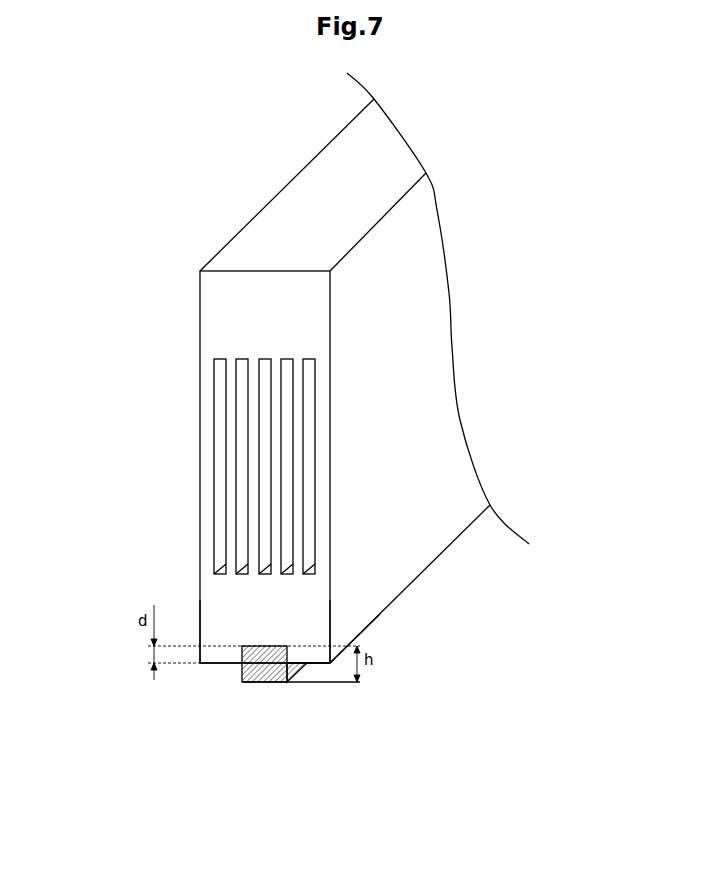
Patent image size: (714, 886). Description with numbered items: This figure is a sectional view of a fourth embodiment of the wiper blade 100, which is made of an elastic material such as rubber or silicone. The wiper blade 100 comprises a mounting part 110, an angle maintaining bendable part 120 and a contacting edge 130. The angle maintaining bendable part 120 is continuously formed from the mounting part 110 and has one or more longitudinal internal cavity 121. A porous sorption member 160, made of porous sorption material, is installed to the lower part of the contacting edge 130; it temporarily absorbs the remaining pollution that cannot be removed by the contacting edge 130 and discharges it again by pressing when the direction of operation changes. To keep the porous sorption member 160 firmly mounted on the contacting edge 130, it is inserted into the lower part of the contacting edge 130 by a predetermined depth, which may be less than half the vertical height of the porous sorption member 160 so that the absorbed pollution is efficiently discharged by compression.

The wiper blade 100 is at (407, 373).
The mounting part 110 is at (242, 309).
The angle maintaining bendable part 120 is at (197, 360).
The longitudinal internal cavity 121 is at (300, 524).
The contacting edge 130 is at (307, 625).
The porous sorption member 160 is at (275, 664).